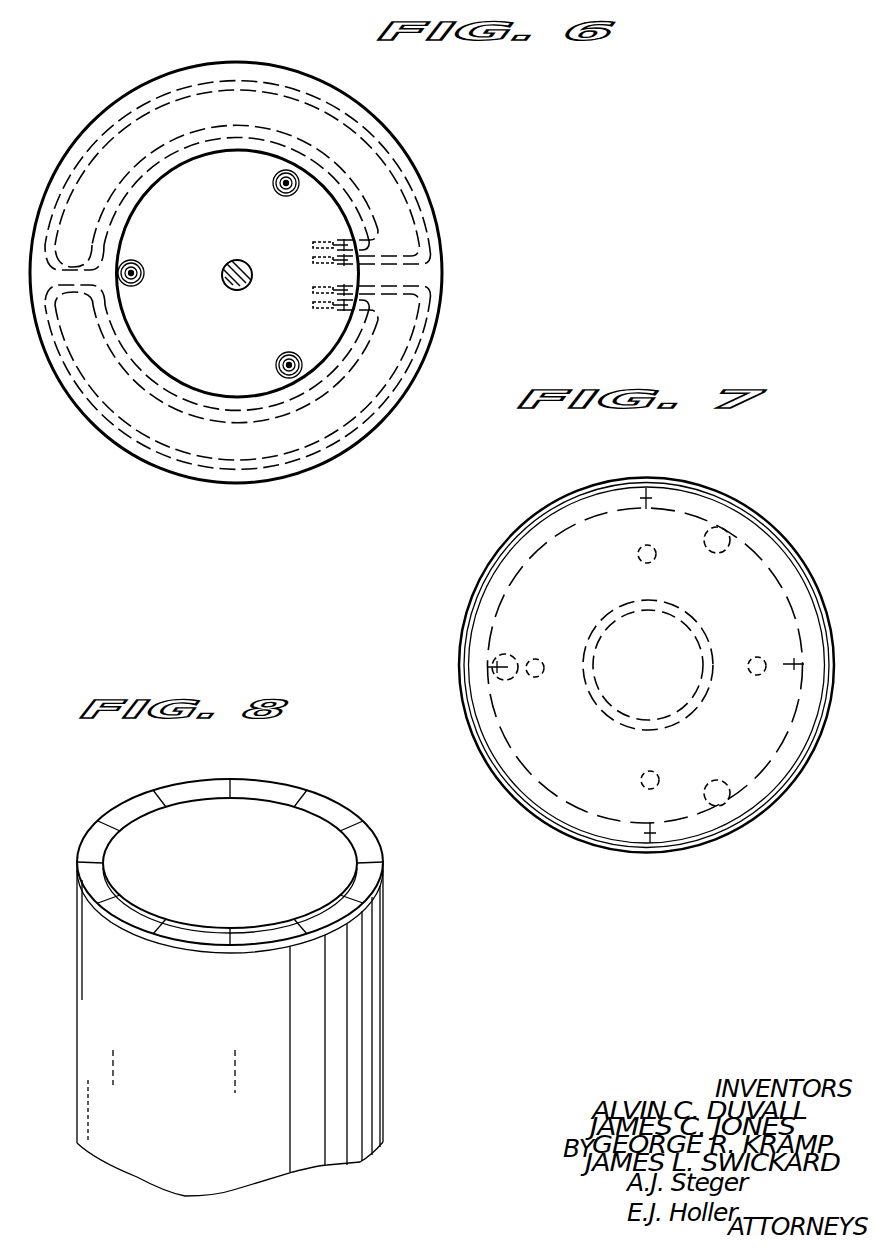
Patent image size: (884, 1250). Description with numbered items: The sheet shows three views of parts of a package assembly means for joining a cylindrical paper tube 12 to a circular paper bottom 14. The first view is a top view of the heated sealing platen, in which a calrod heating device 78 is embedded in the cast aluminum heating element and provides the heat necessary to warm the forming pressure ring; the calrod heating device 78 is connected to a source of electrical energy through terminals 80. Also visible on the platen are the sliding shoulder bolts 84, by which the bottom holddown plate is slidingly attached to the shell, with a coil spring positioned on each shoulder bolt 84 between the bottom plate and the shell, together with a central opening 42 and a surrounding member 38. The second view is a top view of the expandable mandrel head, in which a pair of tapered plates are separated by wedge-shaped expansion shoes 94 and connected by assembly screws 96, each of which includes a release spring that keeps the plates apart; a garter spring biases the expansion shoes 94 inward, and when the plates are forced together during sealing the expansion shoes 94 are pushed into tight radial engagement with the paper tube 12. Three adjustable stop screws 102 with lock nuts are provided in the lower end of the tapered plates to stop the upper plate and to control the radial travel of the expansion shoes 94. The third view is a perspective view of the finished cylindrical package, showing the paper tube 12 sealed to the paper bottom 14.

In FIG. 8, the cylindrical paper tube 12 is at (347, 1008).
In FIG. 8, the circular paper bottom 14 is at (283, 865).
In FIG. 7, the plate 38 is at (593, 634).
In FIG. 6, the central hole 42 is at (244, 260).
In FIG. 6, the calrod heating device 78 is at (421, 233).
In FIG. 6, the terminals 80 is at (314, 259).
In FIG. 6, the sliding shoulder bolts 84 is at (272, 184).
In FIG. 7, the expansion shoes 94 is at (526, 570).
In FIG. 7, the assembly screws 96 is at (651, 563).
In FIG. 7, the adjustable stop screws 102 is at (720, 537).